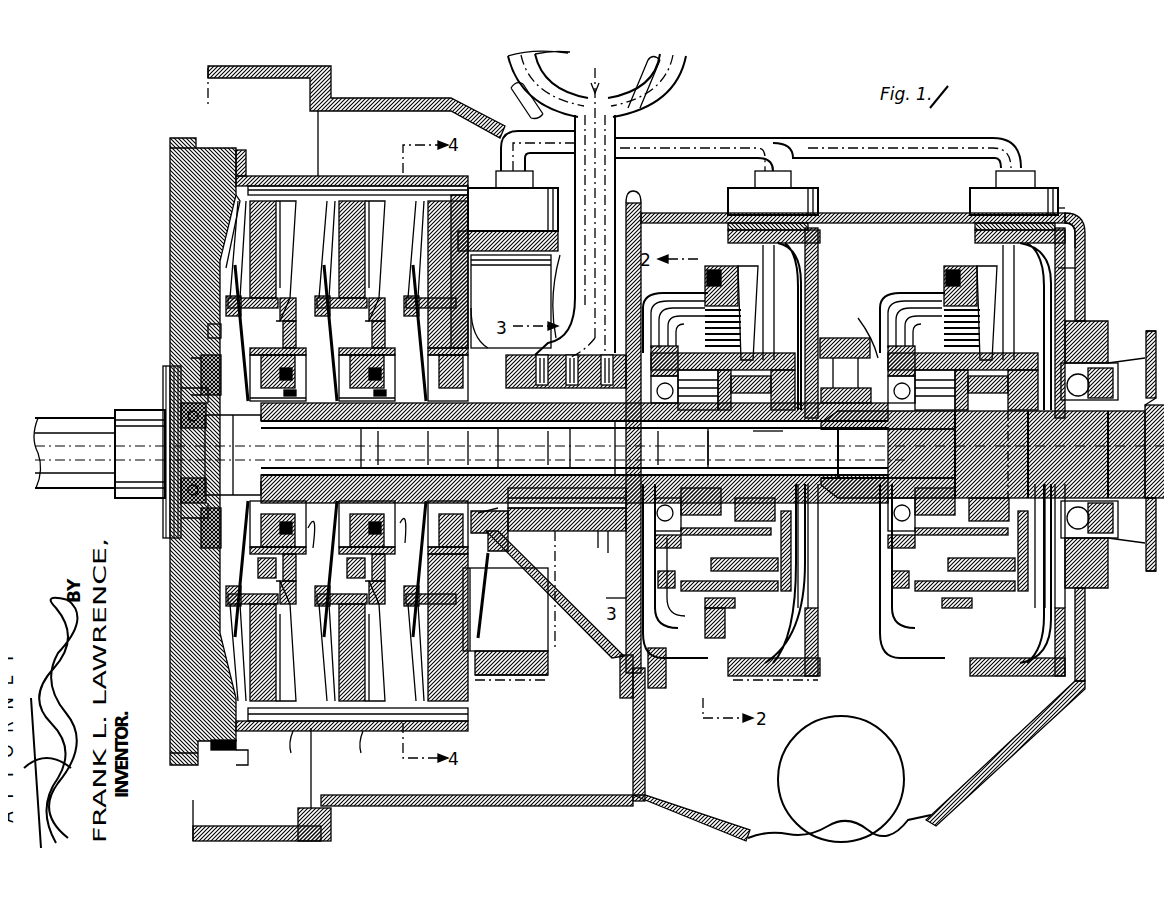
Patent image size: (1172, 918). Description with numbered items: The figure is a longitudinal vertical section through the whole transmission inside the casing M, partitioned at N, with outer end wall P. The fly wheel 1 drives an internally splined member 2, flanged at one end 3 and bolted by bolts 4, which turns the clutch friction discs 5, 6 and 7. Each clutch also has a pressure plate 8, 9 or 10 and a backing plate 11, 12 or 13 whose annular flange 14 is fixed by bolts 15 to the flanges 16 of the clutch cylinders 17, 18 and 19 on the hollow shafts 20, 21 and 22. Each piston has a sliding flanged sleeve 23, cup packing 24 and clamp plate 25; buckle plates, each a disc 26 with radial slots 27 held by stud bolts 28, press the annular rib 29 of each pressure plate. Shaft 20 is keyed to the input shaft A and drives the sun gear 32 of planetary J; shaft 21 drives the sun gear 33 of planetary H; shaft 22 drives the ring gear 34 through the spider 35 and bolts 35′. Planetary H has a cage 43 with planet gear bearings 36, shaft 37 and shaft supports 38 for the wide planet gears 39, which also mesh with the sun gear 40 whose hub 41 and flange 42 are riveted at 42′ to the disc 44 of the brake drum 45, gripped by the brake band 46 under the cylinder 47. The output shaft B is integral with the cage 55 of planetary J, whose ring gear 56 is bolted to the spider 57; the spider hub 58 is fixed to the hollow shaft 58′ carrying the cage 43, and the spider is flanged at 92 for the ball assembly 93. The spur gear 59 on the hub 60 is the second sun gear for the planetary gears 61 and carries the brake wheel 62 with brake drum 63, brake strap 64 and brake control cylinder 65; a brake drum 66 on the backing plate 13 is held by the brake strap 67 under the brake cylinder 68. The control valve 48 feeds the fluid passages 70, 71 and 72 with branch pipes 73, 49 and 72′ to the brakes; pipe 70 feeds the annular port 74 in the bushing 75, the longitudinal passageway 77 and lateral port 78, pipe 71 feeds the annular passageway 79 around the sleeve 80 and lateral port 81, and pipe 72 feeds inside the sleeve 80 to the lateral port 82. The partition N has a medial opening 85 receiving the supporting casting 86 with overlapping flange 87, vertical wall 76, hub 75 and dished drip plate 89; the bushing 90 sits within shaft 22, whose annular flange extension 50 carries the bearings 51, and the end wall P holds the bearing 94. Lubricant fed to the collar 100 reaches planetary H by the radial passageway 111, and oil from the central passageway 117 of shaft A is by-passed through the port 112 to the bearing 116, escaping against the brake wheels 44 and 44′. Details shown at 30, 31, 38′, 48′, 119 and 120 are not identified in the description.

The end housing block 1 is at (190, 258).
The clutch housing plate 2 is at (280, 168).
The spacer 3 is at (234, 160).
The retaining ring 4 is at (236, 752).
The bolt 5 is at (284, 748).
The bolt 6 is at (359, 748).
The lower housing plate 7 is at (460, 715).
The pressure plate 8 is at (256, 176).
The pressure plate 9 is at (331, 195).
The pressure plate 10 is at (418, 195).
The clutch disk 11 is at (284, 682).
The clutch disk 12 is at (370, 686).
The clutch disk 13 is at (462, 690).
The nut 14 is at (487, 312).
The lever 15 is at (470, 590).
The pin 16 is at (483, 610).
The spring seat 17 is at (319, 535).
The spring seat 18 is at (411, 532).
The lever 19 is at (465, 548).
The main shaft 20 is at (320, 413).
The shaft section 21 is at (427, 448).
The housing block 22 is at (556, 523).
The bolt 23 is at (323, 436).
The collar 24 is at (359, 374).
The bolt 25 is at (311, 564).
The ring 26 is at (200, 323).
The collar 27 is at (215, 558).
The nut 28 is at (218, 590).
The lever spring 29 is at (222, 255).
The key 30 is at (335, 384).
The sleeve 31 is at (322, 400).
The clutch ring 32 is at (923, 331).
The clutch ring 33 is at (686, 331).
The clutch hub 34 is at (735, 280).
The clutch drum 35 is at (676, 290).
The clutch drum 35′ is at (700, 630).
The clutch hub 36 is at (684, 571).
The clutch hub 37 is at (723, 548).
The friction ring 38 is at (797, 580).
The friction ring 38′ is at (602, 598).
The drum flange 39 is at (800, 640).
The friction disks 40 is at (742, 315).
The pin 41 is at (802, 520).
The drum wall 42 is at (812, 330).
The drum wall 42′ is at (945, 590).
The pin 43 is at (768, 300).
The drum 44 is at (797, 275).
The drum 44′ is at (1057, 605).
The drum flange 45 is at (812, 232).
The lining 46 is at (800, 218).
The valve 47 is at (812, 188).
The pipe branch 48 is at (672, 85).
The pipe stub 48′ is at (503, 88).
The pipe 49 is at (738, 130).
The shaft portion 50 is at (659, 448).
The shaft portion 51 is at (706, 448).
The clutch drum 55 is at (892, 296).
The clutch hub 56 is at (968, 272).
The pin 57 is at (928, 252).
The shaft portion 58 is at (758, 439).
The shaft portion 58′ is at (675, 462).
The friction disks 59 is at (978, 313).
The drum 60 is at (1012, 322).
The drum flange 61 is at (910, 600).
The wall 62 is at (1050, 262).
The corner 63 is at (1067, 220).
The boss 64 is at (1060, 200).
The valve 65 is at (1045, 180).
The plate 66 is at (511, 655).
The lining 67 is at (536, 668).
The valve 68 is at (504, 259).
The pipe 70 is at (512, 65).
The main pipe 71 is at (610, 117).
The pipe 72 is at (672, 62).
The pipe 72′ is at (828, 130).
The pipe 73 is at (538, 139).
The nut 74 is at (500, 540).
The washer 75 is at (511, 531).
The piston 76 is at (600, 565).
The shaft portion 77 is at (512, 462).
The shaft portion 78 is at (467, 448).
The shaft portion 79 is at (547, 448).
The shaft portion 80 is at (595, 458).
The shaft portion 81 is at (379, 448).
The key 82 is at (330, 462).
The bracket 85 is at (658, 668).
The block 86 is at (612, 680).
The bearing 87 is at (662, 600).
The rod 89 is at (580, 632).
The cylinder 90 is at (591, 553).
The plate 92 is at (845, 370).
The drum wall 93 is at (812, 540).
The bearing bracket 94 is at (1080, 322).
The passage 100 is at (875, 329).
The shaft portion 111 is at (754, 462).
The output hub 112 is at (813, 437).
The bearing 116 is at (1095, 355).
The sleeve 117 is at (107, 402).
The flange 119 is at (172, 398).
The input shaft 120 is at (170, 450).
The shaft section A is at (233, 455).
The output flange B is at (1110, 550).
The clutch H is at (705, 256).
The clutch J is at (912, 272).
The housing floor M is at (362, 798).
The housing wall N is at (637, 732).
The housing wall P is at (1080, 655).